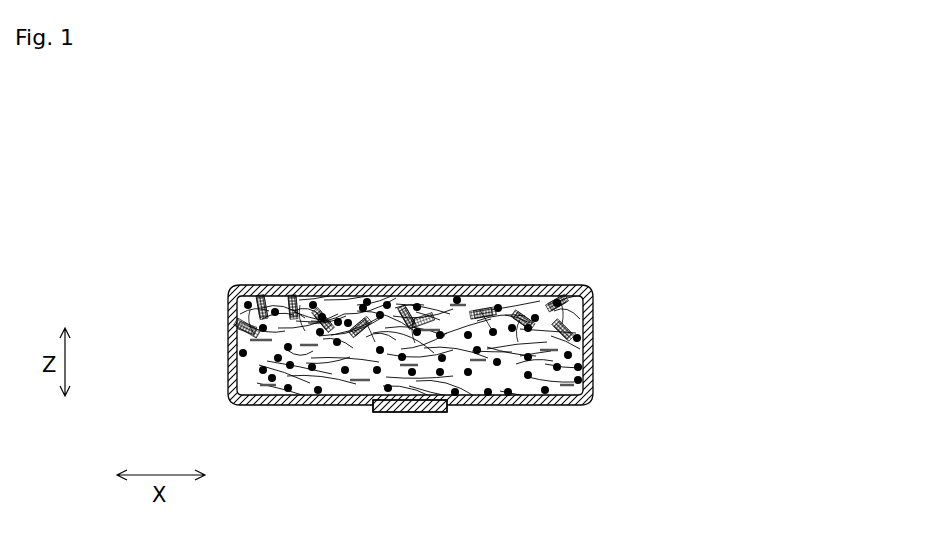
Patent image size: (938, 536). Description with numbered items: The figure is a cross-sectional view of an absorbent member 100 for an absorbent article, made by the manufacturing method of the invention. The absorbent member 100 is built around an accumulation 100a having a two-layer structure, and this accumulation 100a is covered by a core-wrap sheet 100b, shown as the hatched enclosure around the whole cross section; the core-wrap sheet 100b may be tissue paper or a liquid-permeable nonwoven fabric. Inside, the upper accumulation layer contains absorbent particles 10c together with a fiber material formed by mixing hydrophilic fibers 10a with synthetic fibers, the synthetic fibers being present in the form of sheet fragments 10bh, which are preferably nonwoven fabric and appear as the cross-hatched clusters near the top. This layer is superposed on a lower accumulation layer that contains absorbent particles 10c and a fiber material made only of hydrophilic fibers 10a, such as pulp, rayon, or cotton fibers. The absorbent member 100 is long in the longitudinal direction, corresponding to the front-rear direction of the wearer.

The absorbent member 100 is at (616, 197).
The core-wrap sheet 100b is at (230, 343).
The accumulation 100a is at (340, 383).
The hydrophilic fibers 10a is at (537, 298).
The absorbent particles 10c is at (465, 301).
The sheet fragments 10bh is at (340, 298).